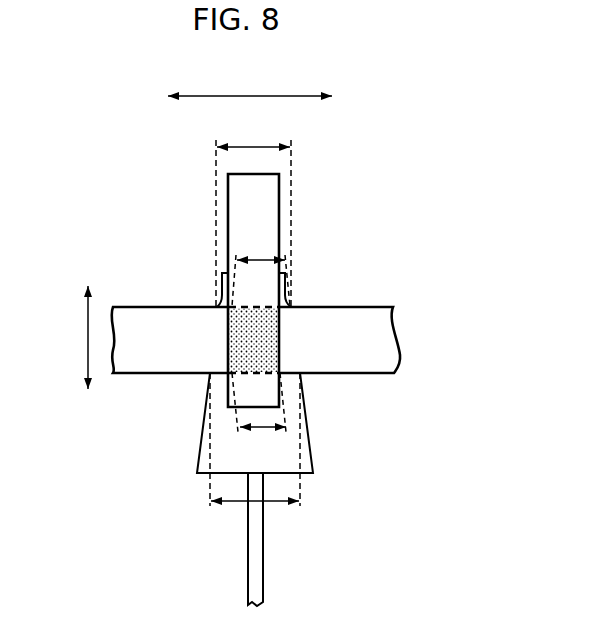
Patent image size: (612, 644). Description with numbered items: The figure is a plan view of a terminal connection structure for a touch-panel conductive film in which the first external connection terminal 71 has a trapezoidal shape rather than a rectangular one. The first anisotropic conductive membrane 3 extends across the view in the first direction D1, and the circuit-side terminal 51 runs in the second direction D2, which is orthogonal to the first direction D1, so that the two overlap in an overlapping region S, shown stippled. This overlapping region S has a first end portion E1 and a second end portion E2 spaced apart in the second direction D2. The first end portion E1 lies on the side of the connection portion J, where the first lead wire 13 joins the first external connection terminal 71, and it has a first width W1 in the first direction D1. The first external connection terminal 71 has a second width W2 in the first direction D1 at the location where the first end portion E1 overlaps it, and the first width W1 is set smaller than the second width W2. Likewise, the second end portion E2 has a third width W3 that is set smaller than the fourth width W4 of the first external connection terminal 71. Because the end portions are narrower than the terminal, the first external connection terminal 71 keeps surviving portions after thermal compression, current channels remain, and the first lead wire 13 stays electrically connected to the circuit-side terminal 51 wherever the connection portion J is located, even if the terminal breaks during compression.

The first anisotropic conductive membrane 3 is at (360, 307).
The first lead wire 13 is at (247, 543).
The circuit-side terminal 51 is at (279, 212).
The first external connection terminal 71 is at (202, 422).
The overlapping region S is at (260, 333).
The connection portion J is at (250, 476).
The first end portion E1 is at (249, 367).
The second end portion E2 is at (247, 312).
The first direction D1 is at (250, 78).
The second direction D2 is at (67, 337).
The first width W1 is at (259, 418).
The second width W2 is at (279, 445).
The third width W3 is at (254, 268).
The fourth width W4 is at (276, 222).